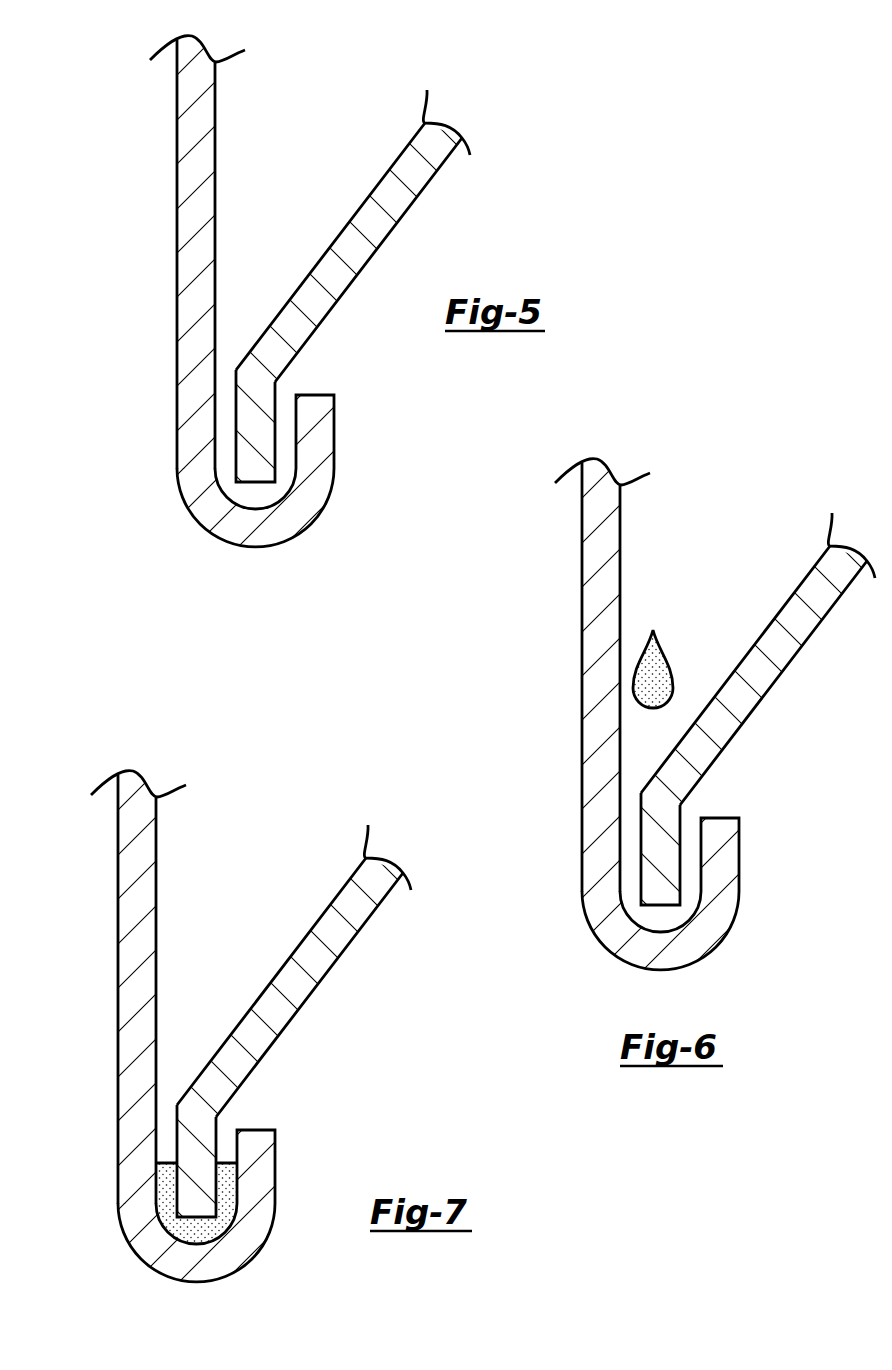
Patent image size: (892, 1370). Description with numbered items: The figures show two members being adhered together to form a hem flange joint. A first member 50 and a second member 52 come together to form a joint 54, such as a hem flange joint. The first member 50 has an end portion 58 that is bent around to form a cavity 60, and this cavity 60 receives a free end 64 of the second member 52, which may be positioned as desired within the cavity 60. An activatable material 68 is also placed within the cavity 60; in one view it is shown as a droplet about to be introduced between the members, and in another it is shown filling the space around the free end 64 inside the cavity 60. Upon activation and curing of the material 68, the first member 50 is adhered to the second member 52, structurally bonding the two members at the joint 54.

In FIG. 5, the first member 50 is at (178, 178).
In FIG. 6, the first member 50 is at (582, 568).
In FIG. 7, the first member 50 is at (128, 924).
In FIG. 5, the second member 52 is at (378, 237).
In FIG. 6, the second member 52 is at (786, 664).
In FIG. 7, the second member 52 is at (324, 975).
In FIG. 5, the joint 54 is at (345, 122).
In FIG. 6, the joint 54 is at (755, 507).
In FIG. 7, the joint 54 is at (243, 842).
In FIG. 5, the end portion 58 is at (145, 510).
In FIG. 6, the end portion 58 is at (550, 942).
In FIG. 7, the end portion 58 is at (126, 1298).
In FIG. 5, the cavity 60 is at (257, 497).
In FIG. 6, the cavity 60 is at (661, 920).
In FIG. 7, the cavity 60 is at (207, 1232).
In FIG. 5, the free end 64 is at (263, 440).
In FIG. 6, the free end 64 is at (668, 878).
In FIG. 7, the free end 64 is at (202, 1150).
In FIG. 6, the activatable material 68 is at (667, 680).
In FIG. 7, the activatable material 68 is at (167, 1203).